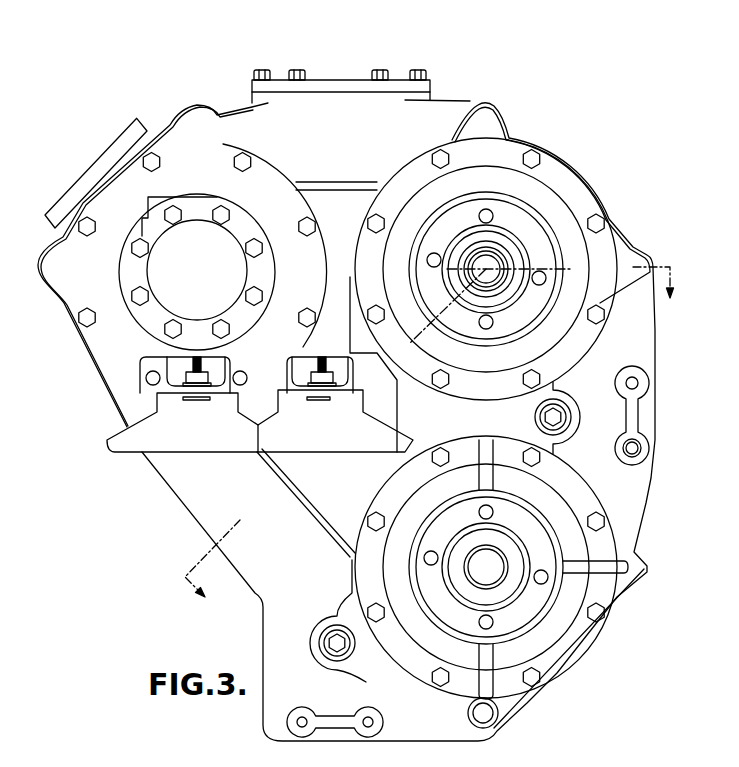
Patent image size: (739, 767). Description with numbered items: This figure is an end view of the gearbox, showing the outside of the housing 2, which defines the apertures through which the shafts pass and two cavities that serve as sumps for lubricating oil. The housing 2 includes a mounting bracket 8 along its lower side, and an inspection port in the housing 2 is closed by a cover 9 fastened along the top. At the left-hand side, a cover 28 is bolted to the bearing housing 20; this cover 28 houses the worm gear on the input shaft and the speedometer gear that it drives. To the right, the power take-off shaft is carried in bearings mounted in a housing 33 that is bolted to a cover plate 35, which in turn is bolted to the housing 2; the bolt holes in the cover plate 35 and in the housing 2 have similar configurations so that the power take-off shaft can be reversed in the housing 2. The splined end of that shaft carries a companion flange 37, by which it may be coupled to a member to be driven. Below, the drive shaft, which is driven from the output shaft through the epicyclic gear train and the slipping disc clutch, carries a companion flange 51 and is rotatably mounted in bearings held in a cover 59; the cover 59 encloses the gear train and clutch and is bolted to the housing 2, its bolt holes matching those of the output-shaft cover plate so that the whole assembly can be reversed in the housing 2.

The housing 2 is at (343, 132).
The mounting bracket 8 is at (187, 432).
The cover 9 is at (332, 85).
The bearing housing 20 is at (97, 340).
The cover 28 is at (148, 318).
The housing 33 is at (538, 220).
The cover plate 35 is at (550, 170).
The companion flange 37 is at (545, 260).
The companion flange 51 is at (528, 608).
The cover 59 is at (574, 647).